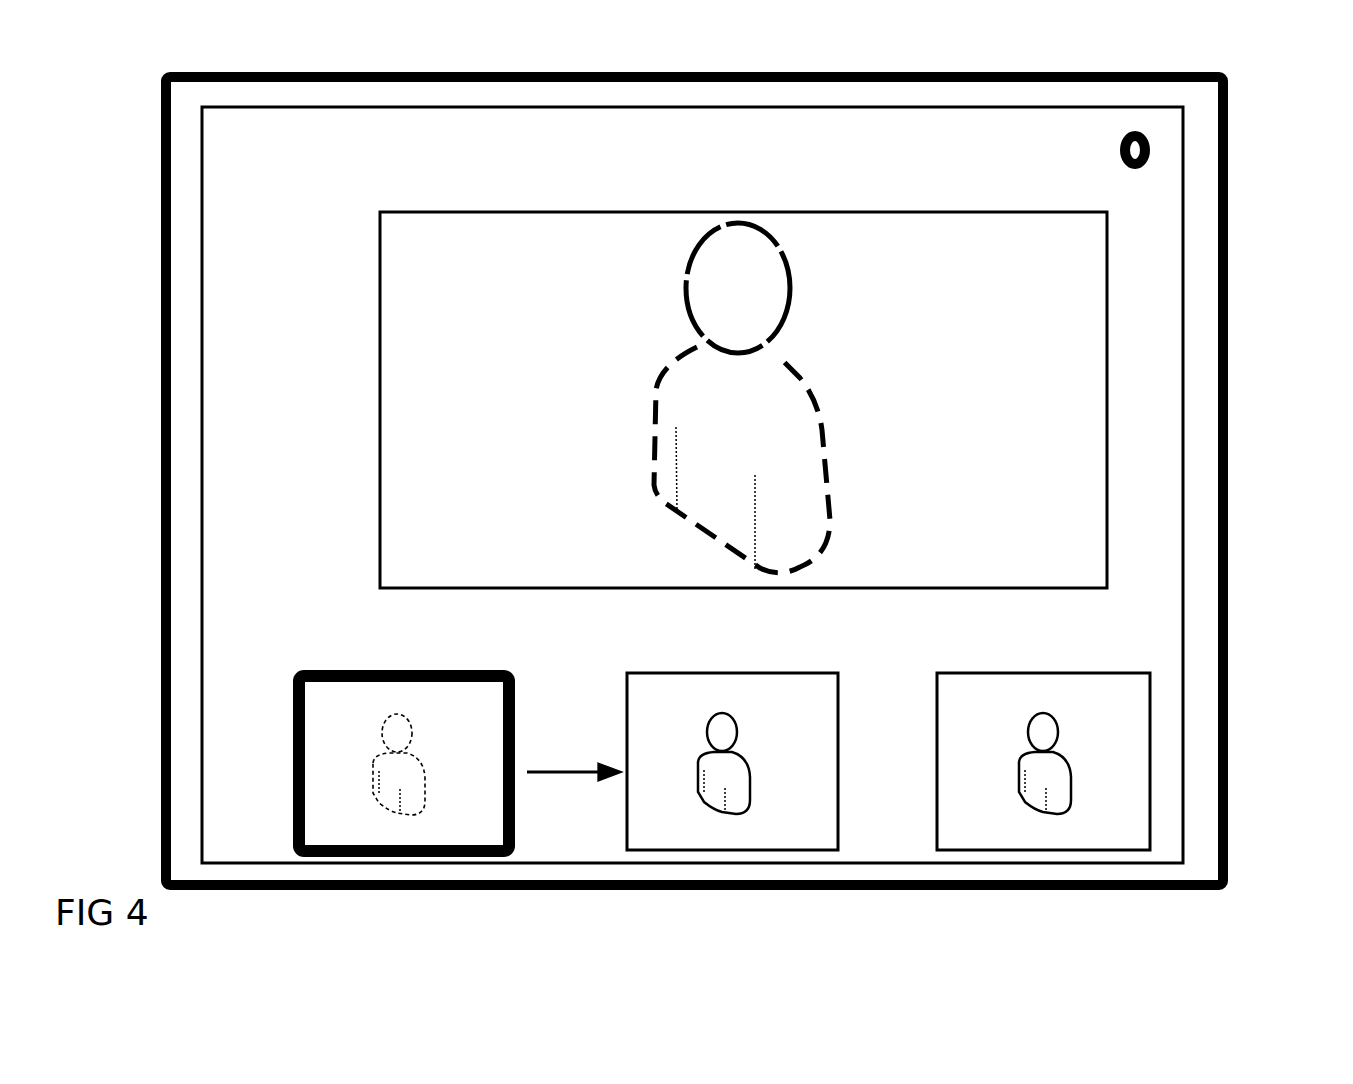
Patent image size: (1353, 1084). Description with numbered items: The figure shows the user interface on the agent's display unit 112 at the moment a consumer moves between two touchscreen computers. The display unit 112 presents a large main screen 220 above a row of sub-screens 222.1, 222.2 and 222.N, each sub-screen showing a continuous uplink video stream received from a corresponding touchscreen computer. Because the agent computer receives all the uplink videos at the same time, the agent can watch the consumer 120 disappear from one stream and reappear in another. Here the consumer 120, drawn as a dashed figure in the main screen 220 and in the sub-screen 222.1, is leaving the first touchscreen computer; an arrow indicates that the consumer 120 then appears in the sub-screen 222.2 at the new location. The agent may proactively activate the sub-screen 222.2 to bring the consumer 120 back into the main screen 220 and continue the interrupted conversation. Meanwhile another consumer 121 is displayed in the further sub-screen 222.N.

The display unit 112 is at (376, 165).
The consumer 120 is at (767, 270).
The consumer 121 is at (1068, 777).
The main screen 220 is at (1107, 373).
The sub-screen 222.1 is at (293, 765).
The sub-screen 222.2 is at (715, 850).
The sub-screen 222.N is at (1150, 703).